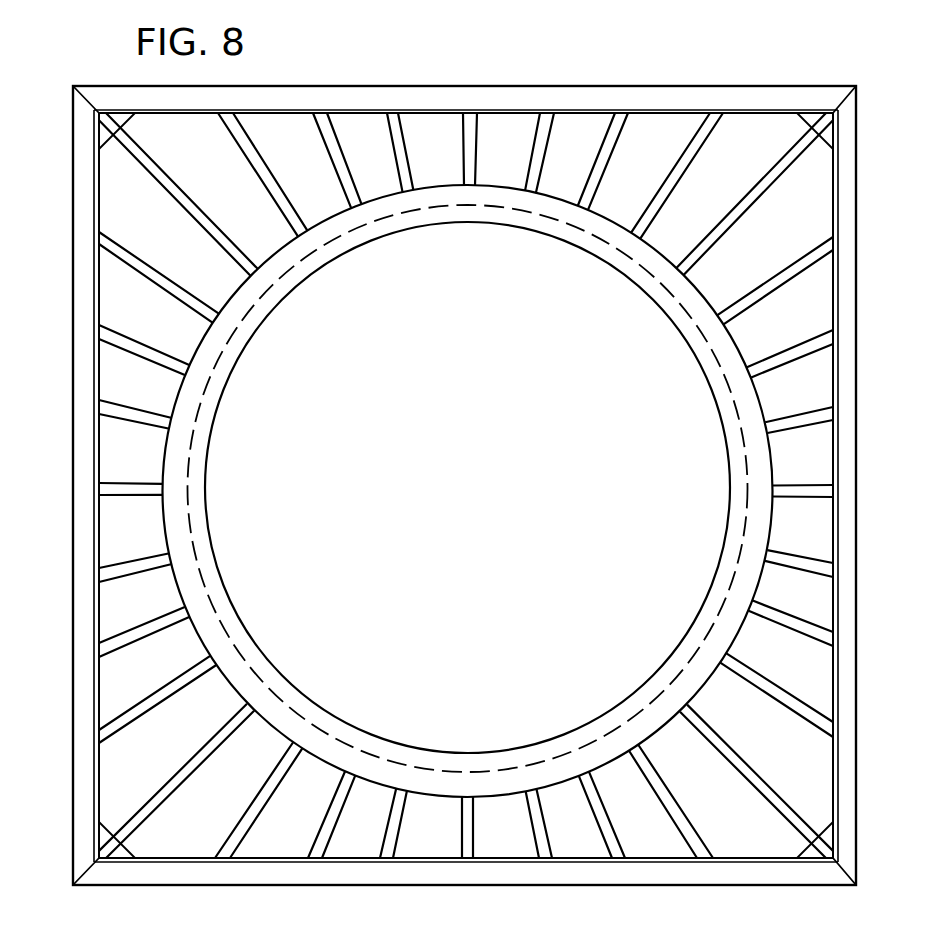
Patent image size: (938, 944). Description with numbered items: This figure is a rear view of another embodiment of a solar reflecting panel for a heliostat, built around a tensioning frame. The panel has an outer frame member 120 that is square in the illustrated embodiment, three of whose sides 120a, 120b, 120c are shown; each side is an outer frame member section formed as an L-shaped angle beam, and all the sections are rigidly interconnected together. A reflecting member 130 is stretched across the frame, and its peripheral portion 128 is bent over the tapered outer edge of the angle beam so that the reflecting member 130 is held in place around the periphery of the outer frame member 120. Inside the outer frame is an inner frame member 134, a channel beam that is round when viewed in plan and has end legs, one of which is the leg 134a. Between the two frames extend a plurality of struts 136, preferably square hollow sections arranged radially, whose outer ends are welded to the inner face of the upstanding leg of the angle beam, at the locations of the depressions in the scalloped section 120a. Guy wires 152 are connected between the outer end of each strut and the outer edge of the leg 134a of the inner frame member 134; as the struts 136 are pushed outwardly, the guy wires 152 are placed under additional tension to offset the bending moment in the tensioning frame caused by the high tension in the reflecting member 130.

The outer frame member 120 is at (368, 67).
The outer frame member section 120a is at (85, 480).
The outer frame member section 120b is at (492, 87).
The outer frame member section 120c is at (847, 428).
The peripheral portion 128 is at (647, 100).
The reflecting member 130 is at (312, 167).
The inner frame member 134 is at (298, 452).
The end leg 134a is at (210, 565).
The struts 136 is at (465, 130).
The guy wires 152 is at (178, 749).